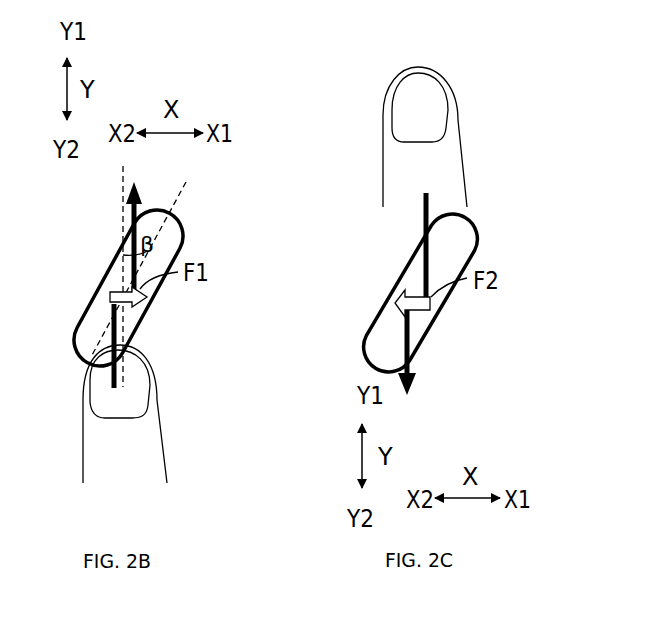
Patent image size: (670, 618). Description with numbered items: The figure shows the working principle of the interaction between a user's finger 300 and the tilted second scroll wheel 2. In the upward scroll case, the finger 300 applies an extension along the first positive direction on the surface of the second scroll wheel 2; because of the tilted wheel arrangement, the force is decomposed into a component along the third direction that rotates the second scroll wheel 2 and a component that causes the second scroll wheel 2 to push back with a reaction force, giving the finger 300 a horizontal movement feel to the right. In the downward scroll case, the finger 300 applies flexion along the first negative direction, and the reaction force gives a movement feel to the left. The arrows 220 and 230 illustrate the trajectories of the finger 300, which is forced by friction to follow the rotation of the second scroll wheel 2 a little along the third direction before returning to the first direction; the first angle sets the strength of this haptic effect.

In FIG. 2B, the second scroll wheel 2 is at (181, 214).
In FIG. 2C, the second scroll wheel 2 is at (474, 233).
In FIG. 2B, the arrow 220 is at (130, 206).
In FIG. 2C, the arrow 230 is at (422, 254).
In FIG. 2B, the finger 300 is at (156, 352).
In FIG. 2C, the finger 300 is at (460, 92).